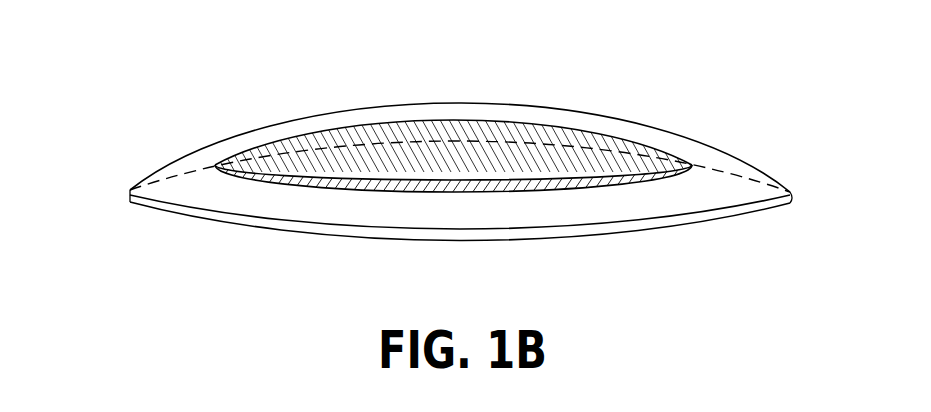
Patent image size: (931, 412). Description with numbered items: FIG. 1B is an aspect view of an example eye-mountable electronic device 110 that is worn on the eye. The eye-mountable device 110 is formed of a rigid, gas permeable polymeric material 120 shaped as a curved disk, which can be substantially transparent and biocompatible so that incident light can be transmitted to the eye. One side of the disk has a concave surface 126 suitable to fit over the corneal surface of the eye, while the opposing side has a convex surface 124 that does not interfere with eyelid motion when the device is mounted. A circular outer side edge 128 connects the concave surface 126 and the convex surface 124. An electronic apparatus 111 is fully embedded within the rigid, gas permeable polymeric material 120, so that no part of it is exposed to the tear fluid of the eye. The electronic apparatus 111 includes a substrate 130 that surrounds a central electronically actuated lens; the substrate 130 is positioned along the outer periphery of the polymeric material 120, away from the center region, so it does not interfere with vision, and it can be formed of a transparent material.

The eye-mountable electronic device 110 is at (156, 72).
The electronic apparatus 111 is at (350, 121).
The rigid, gas permeable polymeric material 120 is at (216, 230).
The convex surface 124 is at (702, 143).
The concave surface 126 is at (717, 206).
The circular outer side edge 128 is at (610, 228).
The substrate 130 is at (182, 167).